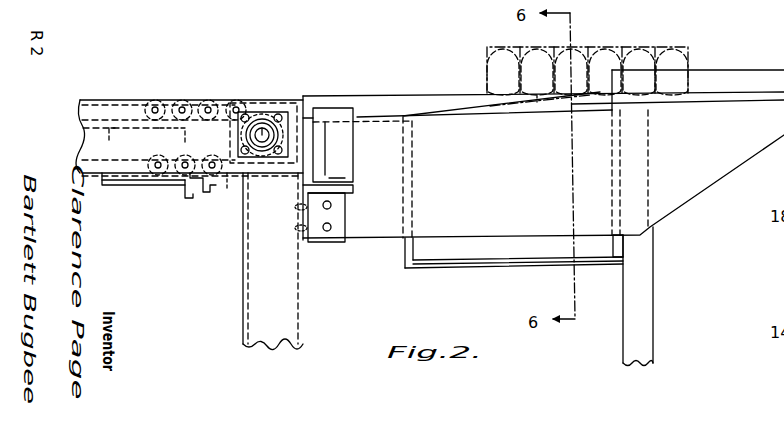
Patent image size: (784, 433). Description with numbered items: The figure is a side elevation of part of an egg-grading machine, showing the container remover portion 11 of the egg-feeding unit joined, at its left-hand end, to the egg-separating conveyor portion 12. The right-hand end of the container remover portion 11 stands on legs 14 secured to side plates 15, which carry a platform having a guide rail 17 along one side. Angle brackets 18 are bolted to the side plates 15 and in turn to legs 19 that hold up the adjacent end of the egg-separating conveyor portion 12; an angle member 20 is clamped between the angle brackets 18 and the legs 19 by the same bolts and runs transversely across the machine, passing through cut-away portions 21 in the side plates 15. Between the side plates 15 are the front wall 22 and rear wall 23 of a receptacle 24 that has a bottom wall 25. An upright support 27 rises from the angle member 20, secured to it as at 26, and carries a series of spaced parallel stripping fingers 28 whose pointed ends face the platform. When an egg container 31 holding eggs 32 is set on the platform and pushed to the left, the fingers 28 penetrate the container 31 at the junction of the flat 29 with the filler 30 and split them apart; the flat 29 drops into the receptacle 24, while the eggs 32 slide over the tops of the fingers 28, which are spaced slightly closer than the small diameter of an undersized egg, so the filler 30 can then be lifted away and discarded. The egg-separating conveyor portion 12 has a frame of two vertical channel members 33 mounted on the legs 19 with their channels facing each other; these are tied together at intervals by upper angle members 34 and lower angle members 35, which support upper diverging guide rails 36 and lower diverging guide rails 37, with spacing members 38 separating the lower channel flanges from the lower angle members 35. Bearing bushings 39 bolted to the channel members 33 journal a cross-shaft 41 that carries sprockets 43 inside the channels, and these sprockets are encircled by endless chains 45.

The container remover portion 11 is at (707, 57).
The egg-separating conveyor portion 12 is at (173, 97).
The legs 14 is at (647, 297).
The side plates 15 is at (690, 190).
The guide rail 17 is at (764, 69).
The angle brackets 18 is at (328, 244).
The legs 19 is at (258, 295).
The angle member 20 is at (350, 186).
The cut-away portions 21 is at (354, 158).
The front wall 22 is at (405, 243).
The rear wall 23 is at (615, 244).
The receptacle 24 is at (478, 256).
The bottom wall 25 is at (512, 265).
The securing point 26 is at (346, 178).
The upright support 27 is at (326, 118).
The stripping fingers 28 is at (428, 95).
The flat 29 is at (538, 109).
The filler 30 is at (683, 47).
The egg container 31 is at (632, 48).
The eggs 32 is at (607, 50).
The channel members 33 is at (78, 150).
The upper angle members 34 is at (183, 138).
The lower angle members 35 is at (183, 195).
The upper diverging guide rails 36 is at (116, 143).
The lower diverging guide rails 37 is at (117, 184).
The spacing members 38 is at (209, 190).
The bearing bushings 39 is at (251, 173).
The cross-shaft 41 is at (270, 173).
The sprockets 43 is at (227, 191).
The endless chains 45 is at (196, 100).